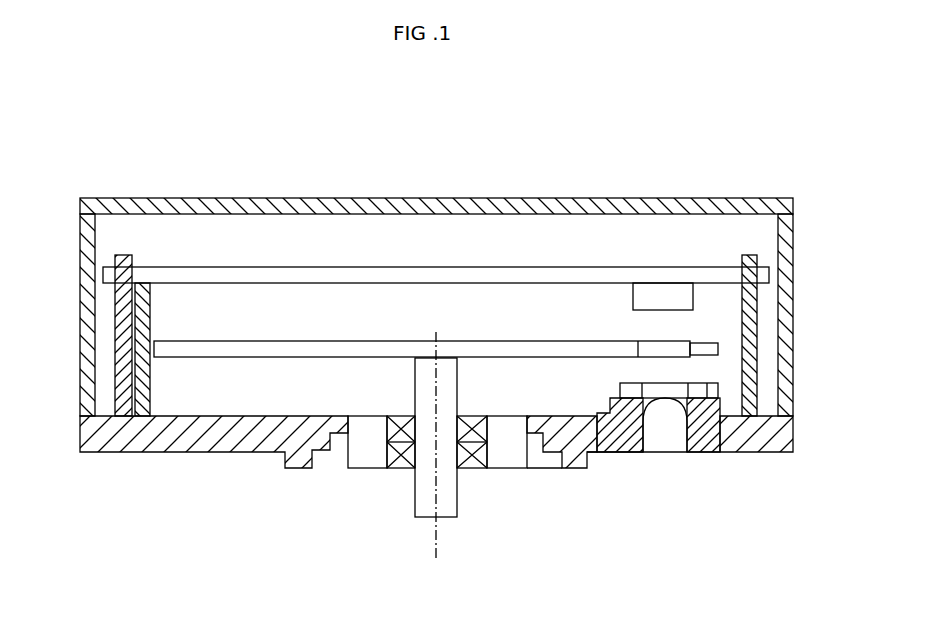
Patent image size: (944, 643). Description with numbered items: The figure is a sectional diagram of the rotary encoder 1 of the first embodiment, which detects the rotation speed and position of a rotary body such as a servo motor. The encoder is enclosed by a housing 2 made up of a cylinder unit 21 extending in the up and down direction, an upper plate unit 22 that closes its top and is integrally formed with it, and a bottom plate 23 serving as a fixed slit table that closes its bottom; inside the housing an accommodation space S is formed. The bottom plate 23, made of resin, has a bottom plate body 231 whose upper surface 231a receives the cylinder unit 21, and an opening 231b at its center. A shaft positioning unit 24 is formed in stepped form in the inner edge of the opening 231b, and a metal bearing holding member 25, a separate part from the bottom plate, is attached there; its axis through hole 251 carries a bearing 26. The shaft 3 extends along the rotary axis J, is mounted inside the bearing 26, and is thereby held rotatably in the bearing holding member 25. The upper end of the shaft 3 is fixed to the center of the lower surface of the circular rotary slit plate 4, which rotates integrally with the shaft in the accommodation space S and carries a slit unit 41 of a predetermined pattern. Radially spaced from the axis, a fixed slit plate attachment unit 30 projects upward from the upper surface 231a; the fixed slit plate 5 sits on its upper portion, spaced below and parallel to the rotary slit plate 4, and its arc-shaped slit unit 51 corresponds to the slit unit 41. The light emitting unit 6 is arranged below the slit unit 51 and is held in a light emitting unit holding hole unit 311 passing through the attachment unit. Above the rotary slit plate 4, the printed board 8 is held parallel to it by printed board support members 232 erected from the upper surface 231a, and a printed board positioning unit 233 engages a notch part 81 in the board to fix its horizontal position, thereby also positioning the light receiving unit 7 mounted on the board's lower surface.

The rotary encoder 1 is at (708, 108).
The housing 2 is at (468, 274).
The cylinder unit 21 is at (795, 273).
The upper plate unit 22 is at (768, 198).
The bottom plate 23 is at (454, 481).
The bottom plate body 231 is at (235, 484).
The upper surface 231a is at (240, 408).
The opening 231b is at (348, 418).
The printed board support member 232 is at (153, 297).
The printed board positioning unit 233 is at (123, 303).
The shaft positioning unit 24 is at (331, 452).
The bearing holding member 25 is at (527, 463).
The axis through hole 251 is at (478, 463).
The bearing 26 is at (397, 462).
The shaft 3 is at (448, 485).
The fixed slit plate attachment unit 30 is at (722, 407).
The light emitting unit holding hole unit 311 is at (652, 436).
The rotary slit plate 4 is at (491, 412).
The slit unit 41 is at (694, 350).
The fixed slit plate 5 is at (719, 425).
The slit unit 51 is at (690, 393).
The light emitting unit 6 is at (652, 464).
The light receiving unit 7 is at (665, 297).
The printed board 8 is at (435, 284).
The notch part 81 is at (121, 270).
The rotary axis J is at (431, 530).
The accommodation space S is at (166, 388).